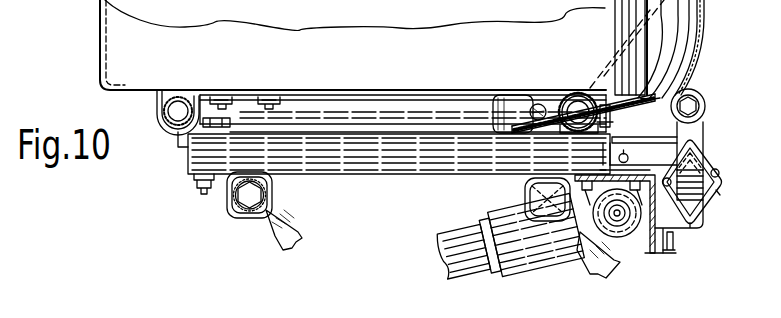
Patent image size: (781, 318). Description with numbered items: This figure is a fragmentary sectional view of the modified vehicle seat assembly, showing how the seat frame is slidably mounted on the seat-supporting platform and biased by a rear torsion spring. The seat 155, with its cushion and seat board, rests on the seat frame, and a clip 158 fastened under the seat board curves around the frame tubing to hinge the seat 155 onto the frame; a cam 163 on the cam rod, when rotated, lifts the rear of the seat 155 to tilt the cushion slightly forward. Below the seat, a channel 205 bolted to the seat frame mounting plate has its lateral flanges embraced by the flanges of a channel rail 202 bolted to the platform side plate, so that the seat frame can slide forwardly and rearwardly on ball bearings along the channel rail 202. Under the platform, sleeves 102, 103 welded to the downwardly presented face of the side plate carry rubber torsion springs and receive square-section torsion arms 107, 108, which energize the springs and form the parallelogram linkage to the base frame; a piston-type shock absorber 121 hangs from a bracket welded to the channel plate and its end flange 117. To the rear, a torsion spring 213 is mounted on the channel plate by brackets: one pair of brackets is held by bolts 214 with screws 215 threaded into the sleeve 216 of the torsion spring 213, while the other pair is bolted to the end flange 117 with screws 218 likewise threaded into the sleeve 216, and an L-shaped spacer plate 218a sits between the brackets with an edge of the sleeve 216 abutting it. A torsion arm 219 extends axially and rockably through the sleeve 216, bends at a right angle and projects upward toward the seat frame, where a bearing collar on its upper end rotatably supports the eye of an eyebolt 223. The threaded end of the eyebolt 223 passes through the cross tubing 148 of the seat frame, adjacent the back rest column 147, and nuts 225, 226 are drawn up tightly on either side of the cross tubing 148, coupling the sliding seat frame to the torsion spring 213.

The seat 155 is at (97, 37).
The back rest column 147 is at (706, 4).
The eyebolt 223 is at (660, 82).
The channel 205 is at (331, 130).
The clip 158 is at (159, 118).
The channel rail 202 is at (364, 175).
The sleeve 102 is at (275, 188).
The torsion arm 108 is at (273, 236).
The cam 163 is at (500, 94).
The nut 226 is at (535, 103).
The cross tubing 148 is at (577, 94).
The nut 225 is at (603, 104).
The torsion arm 219 is at (705, 126).
The bolts 214 is at (627, 155).
The screws 215 is at (712, 158).
The torsion spring 213 is at (761, 170).
The sleeve 216 is at (719, 193).
The screws 218 is at (708, 220).
The L-shaped spacer plate 218a is at (659, 255).
The sleeve 103 is at (524, 184).
The shock absorber 121 is at (470, 280).
The end flange 117 is at (648, 262).
The torsion arm 107 is at (598, 272).